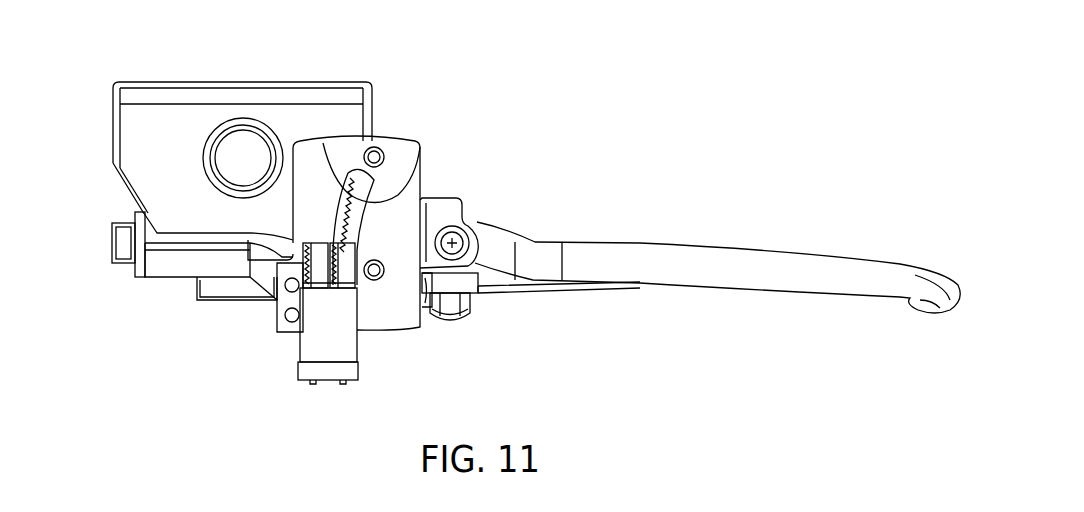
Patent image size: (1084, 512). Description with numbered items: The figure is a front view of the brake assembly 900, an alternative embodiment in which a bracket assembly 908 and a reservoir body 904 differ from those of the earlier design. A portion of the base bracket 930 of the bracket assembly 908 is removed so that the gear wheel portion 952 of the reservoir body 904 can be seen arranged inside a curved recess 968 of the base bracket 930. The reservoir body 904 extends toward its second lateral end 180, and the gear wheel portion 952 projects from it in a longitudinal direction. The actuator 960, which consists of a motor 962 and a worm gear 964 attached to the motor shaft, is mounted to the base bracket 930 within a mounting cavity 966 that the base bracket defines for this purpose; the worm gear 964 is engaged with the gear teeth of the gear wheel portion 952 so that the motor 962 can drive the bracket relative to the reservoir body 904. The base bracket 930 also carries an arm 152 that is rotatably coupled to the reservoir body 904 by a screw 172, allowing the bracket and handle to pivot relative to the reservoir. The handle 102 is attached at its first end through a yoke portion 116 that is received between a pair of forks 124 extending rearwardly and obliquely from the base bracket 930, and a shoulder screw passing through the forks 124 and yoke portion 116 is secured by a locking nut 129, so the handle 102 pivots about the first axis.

The brake assembly 900 is at (586, 102).
The reservoir body 904 is at (113, 120).
The second lateral end 180 is at (113, 142).
The gear wheel portion 952 is at (323, 143).
The bracket assembly 908 is at (347, 138).
The base bracket 930 is at (403, 143).
The curved recess 968 is at (422, 146).
The arm 152 is at (440, 200).
The screw 172 is at (478, 230).
The handle 102 is at (716, 243).
The yoke portion 116 is at (492, 282).
The forks 124 is at (467, 312).
The locking nut 129 is at (437, 317).
The worm gear 964 is at (282, 277).
The actuator 960 is at (306, 342).
The motor 962 is at (325, 353).
The mounting cavity 966 is at (320, 295).